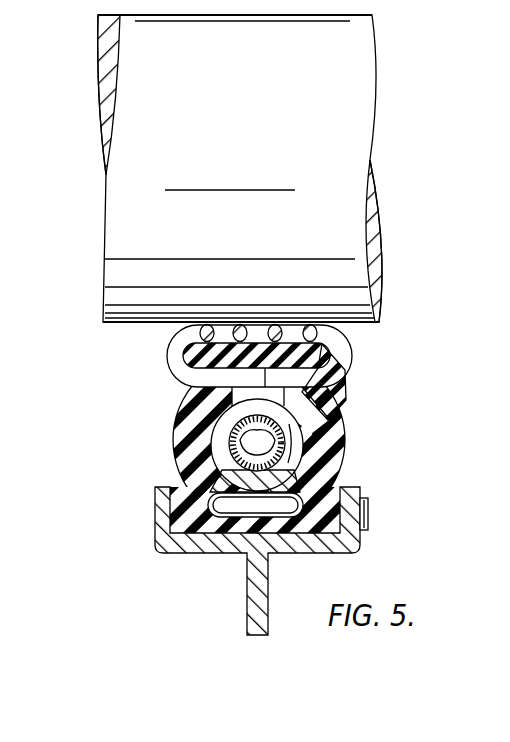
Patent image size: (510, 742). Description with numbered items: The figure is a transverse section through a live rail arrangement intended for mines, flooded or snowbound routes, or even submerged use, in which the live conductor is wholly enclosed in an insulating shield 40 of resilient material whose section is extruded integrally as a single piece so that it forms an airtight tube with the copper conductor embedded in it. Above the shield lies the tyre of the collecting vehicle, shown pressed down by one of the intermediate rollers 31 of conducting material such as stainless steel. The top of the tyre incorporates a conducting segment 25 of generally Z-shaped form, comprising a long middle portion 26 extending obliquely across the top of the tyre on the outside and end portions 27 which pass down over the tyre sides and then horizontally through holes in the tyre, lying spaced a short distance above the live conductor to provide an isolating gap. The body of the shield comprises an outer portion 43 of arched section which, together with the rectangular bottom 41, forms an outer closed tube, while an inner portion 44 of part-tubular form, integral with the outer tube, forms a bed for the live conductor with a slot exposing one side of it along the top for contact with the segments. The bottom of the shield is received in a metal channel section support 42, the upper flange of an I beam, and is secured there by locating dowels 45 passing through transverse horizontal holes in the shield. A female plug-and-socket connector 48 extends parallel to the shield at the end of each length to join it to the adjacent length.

The intermediate roller 31 is at (116, 231).
The long middle portion 26 is at (238, 324).
The conducting segment 25 is at (155, 355).
The end portion 27 is at (228, 380).
The insulating shield 40 is at (232, 472).
The bottom of the shield 41 is at (190, 522).
The outer portion 43 is at (178, 444).
The inner portion 44 is at (222, 450).
The channel section support 42 is at (163, 528).
The female plug-and-socket connector 48 is at (228, 514).
The locating dowel 45 is at (367, 514).